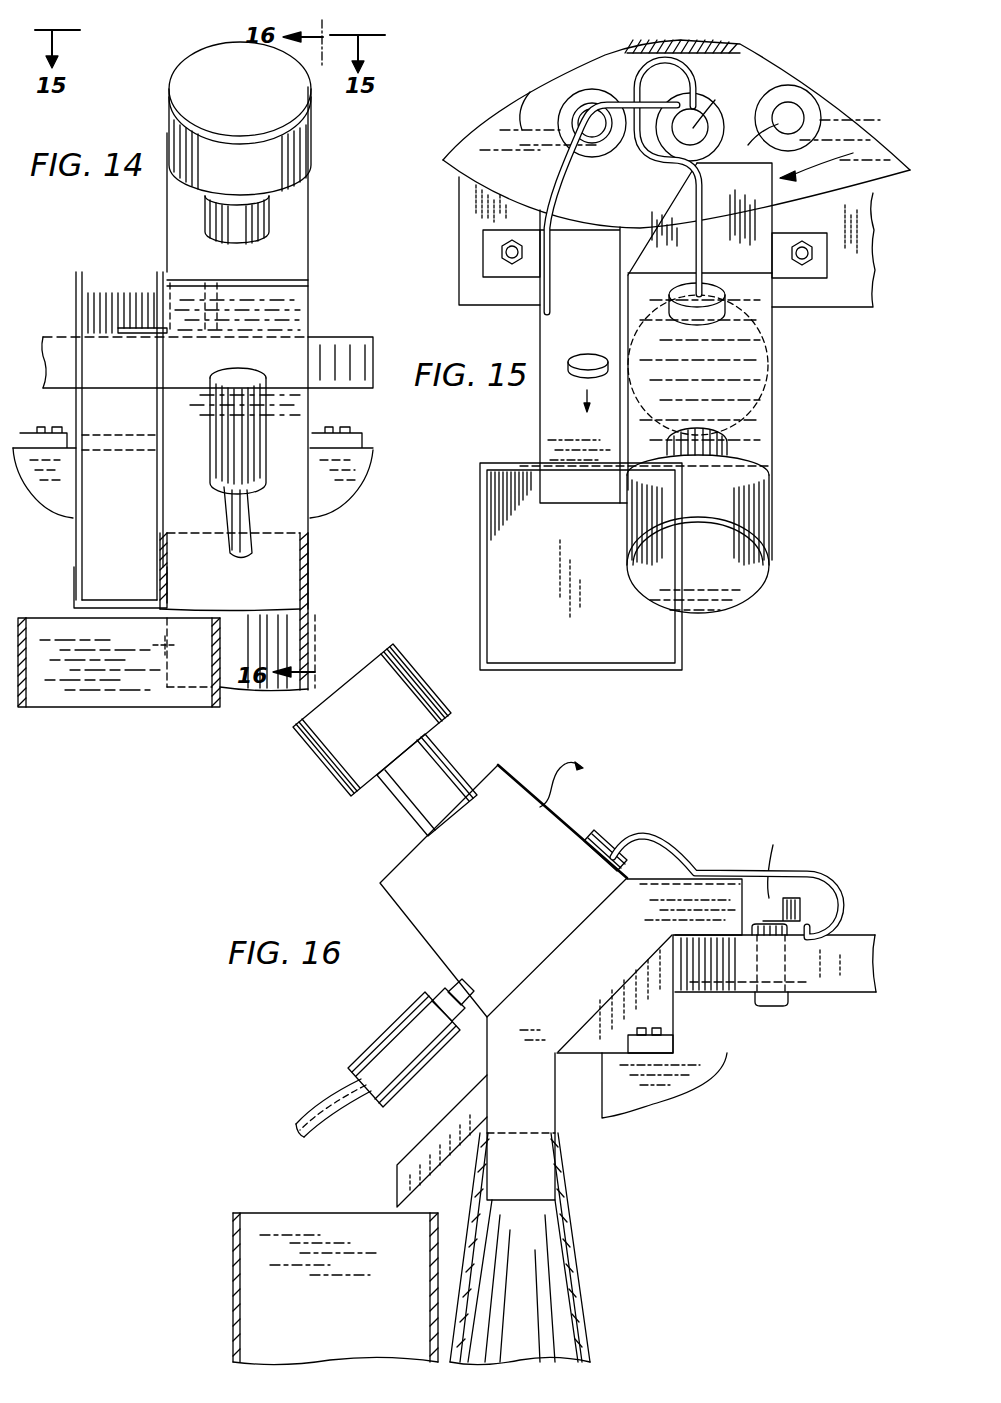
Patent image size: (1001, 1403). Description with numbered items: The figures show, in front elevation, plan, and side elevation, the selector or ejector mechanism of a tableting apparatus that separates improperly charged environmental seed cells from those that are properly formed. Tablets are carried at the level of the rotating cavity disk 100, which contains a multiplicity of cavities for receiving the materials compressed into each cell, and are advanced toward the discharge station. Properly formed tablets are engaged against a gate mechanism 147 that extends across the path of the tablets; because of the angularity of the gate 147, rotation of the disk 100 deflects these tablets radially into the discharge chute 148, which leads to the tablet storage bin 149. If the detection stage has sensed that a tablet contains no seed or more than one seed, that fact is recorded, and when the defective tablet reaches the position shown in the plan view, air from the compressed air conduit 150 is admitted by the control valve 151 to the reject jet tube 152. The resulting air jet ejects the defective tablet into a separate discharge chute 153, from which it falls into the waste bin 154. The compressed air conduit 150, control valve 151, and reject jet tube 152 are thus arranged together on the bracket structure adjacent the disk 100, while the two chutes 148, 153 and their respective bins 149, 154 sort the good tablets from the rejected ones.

In FIG. 14, the cavity disk 100 is at (362, 330).
In FIG. 15, the cavity disk 100 is at (863, 130).
In FIG. 16, the cavity disk 100 is at (848, 982).
In FIG. 15, the gate mechanism 147 is at (562, 177).
In FIG. 16, the gate mechanism 147 is at (795, 898).
In FIG. 14, the discharge chute 148 is at (75, 550).
In FIG. 15, the discharge chute 148 is at (547, 442).
In FIG. 16, the discharge chute 148 is at (397, 1160).
In FIG. 14, the tablet storage bin 149 is at (63, 695).
In FIG. 15, the tablet storage bin 149 is at (490, 575).
In FIG. 16, the tablet storage bin 149 is at (305, 1289).
In FIG. 14, the compressed air conduit 150 is at (312, 522).
In FIG. 16, the compressed air conduit 150 is at (300, 1122).
In FIG. 14, the control valve 151 is at (205, 57).
In FIG. 15, the control valve 151 is at (757, 517).
In FIG. 16, the control valve 151 is at (402, 833).
In FIG. 15, the reject jet tube 152 is at (640, 82).
In FIG. 16, the reject jet tube 152 is at (846, 905).
In FIG. 14, the discharge chute 153 is at (310, 610).
In FIG. 16, the discharge chute 153 is at (605, 985).
In FIG. 16, the waste bin 154 is at (579, 1270).